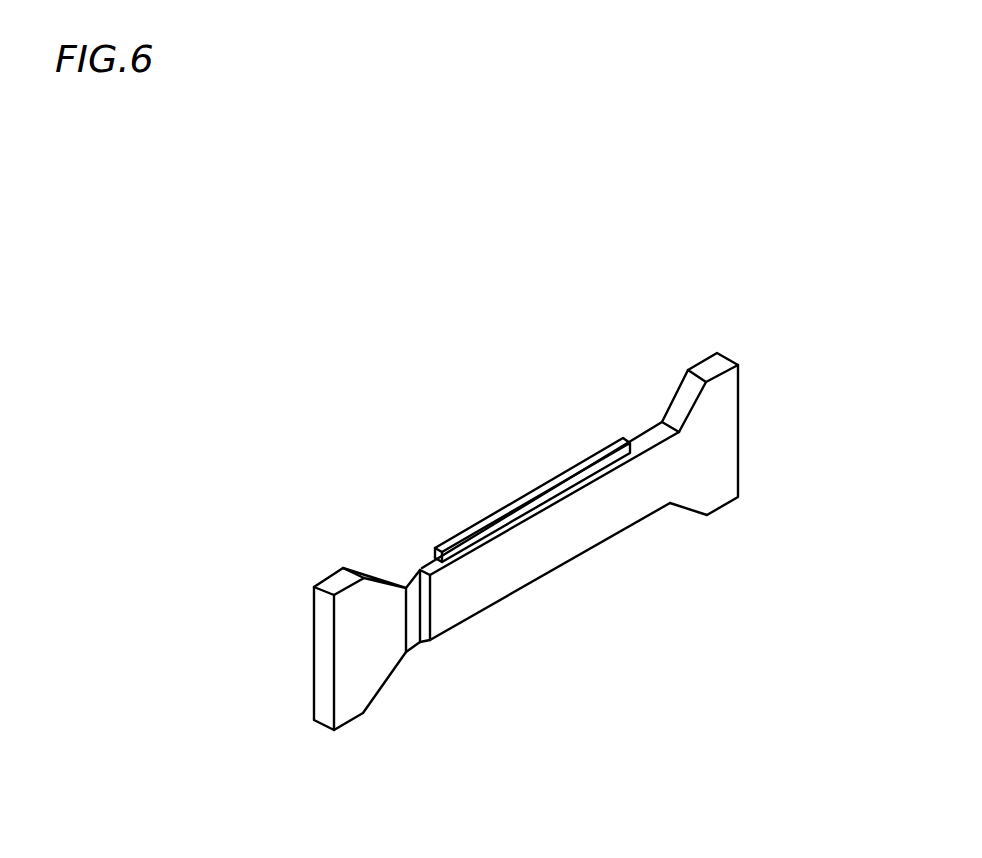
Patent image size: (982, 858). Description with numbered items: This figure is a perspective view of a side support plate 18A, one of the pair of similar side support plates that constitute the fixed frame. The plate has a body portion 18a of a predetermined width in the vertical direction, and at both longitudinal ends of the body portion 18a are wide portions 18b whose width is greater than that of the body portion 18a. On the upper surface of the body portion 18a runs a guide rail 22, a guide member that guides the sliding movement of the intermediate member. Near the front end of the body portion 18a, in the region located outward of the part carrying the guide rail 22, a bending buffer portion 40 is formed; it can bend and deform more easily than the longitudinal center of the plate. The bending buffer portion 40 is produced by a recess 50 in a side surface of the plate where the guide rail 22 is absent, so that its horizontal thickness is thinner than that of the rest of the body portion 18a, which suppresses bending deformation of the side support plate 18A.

The side support plate 18A is at (674, 293).
The body portion 18a is at (555, 548).
The wide portion 18b is at (691, 496).
The guide rail 22 is at (545, 488).
The bending buffer portion 40 is at (390, 551).
The recess 50 is at (422, 648).